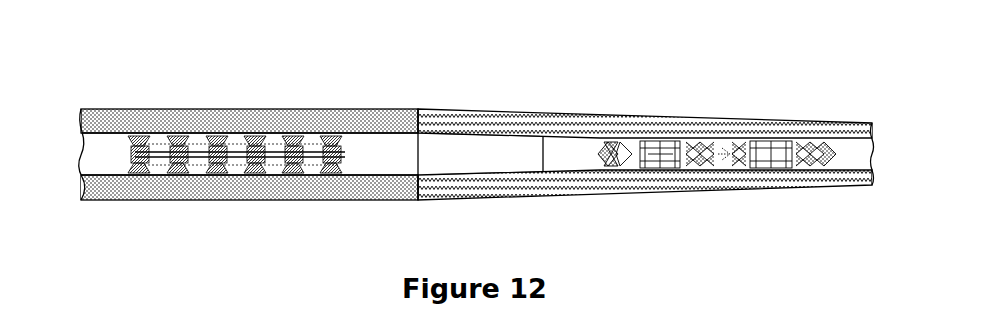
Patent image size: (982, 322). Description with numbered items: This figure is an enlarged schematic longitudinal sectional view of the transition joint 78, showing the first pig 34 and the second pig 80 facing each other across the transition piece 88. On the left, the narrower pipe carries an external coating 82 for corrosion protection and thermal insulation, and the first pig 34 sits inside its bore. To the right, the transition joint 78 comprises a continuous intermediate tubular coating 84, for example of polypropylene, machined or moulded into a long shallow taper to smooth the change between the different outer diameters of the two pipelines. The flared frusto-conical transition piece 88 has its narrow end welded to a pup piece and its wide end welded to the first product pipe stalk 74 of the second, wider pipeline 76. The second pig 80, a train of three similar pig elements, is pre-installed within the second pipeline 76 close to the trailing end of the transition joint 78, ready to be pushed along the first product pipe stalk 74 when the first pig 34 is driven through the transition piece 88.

The first pig 34 is at (692, 152).
The first product pipe stalk 74 is at (92, 155).
The second pipeline 76 is at (220, 140).
The transition joint 78 is at (646, 130).
The second pig 80 is at (220, 153).
The external coating 82 is at (242, 188).
The intermediate tubular coating 84 is at (662, 185).
The transition piece 88 is at (482, 150).